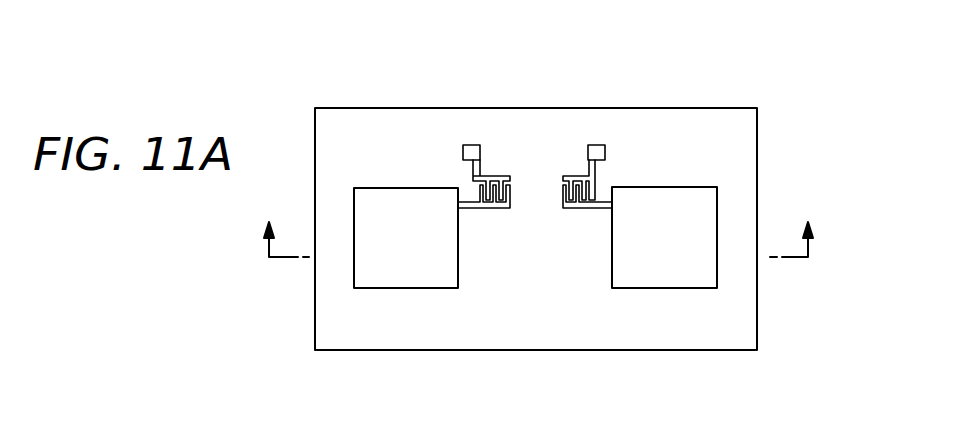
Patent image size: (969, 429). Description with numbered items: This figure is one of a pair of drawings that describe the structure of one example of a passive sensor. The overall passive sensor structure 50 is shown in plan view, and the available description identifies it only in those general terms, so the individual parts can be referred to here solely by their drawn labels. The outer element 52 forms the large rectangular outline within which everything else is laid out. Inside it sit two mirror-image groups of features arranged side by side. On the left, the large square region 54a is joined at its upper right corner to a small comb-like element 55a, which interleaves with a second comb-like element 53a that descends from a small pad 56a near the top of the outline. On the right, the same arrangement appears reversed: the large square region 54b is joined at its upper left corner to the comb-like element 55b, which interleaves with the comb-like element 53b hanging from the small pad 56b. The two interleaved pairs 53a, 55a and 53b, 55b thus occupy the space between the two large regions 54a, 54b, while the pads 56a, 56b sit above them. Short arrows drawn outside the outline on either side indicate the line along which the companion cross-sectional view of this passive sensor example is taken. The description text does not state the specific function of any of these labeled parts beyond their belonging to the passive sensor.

The vibrating element 50 is at (665, 73).
The substrate 52 is at (757, 162).
The first comb-shaped electrode 53a is at (500, 176).
The second comb-shaped electrode 53b is at (568, 176).
The first electrode pad 54a is at (395, 187).
The second electrode pad 54b is at (693, 185).
The first counter comb electrode 55a is at (470, 206).
The second counter comb electrode 55b is at (602, 202).
The first terminal 56a is at (473, 145).
The second terminal 56b is at (601, 145).